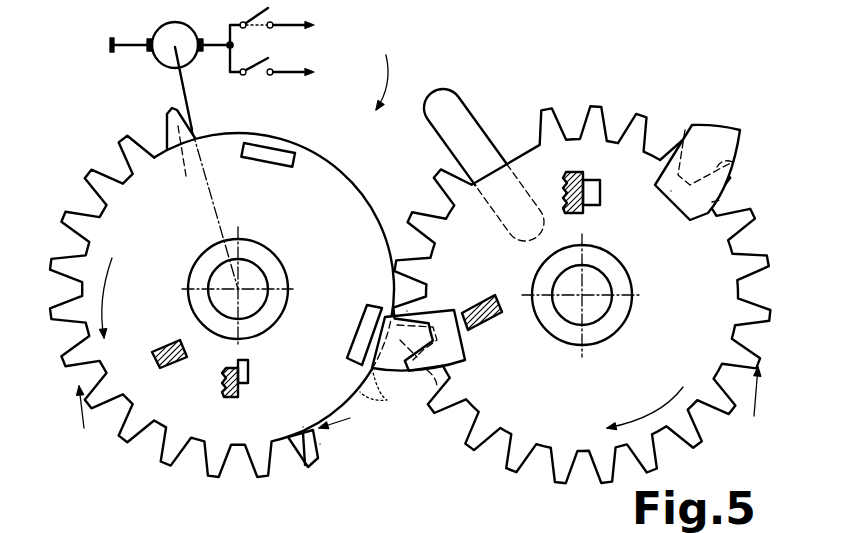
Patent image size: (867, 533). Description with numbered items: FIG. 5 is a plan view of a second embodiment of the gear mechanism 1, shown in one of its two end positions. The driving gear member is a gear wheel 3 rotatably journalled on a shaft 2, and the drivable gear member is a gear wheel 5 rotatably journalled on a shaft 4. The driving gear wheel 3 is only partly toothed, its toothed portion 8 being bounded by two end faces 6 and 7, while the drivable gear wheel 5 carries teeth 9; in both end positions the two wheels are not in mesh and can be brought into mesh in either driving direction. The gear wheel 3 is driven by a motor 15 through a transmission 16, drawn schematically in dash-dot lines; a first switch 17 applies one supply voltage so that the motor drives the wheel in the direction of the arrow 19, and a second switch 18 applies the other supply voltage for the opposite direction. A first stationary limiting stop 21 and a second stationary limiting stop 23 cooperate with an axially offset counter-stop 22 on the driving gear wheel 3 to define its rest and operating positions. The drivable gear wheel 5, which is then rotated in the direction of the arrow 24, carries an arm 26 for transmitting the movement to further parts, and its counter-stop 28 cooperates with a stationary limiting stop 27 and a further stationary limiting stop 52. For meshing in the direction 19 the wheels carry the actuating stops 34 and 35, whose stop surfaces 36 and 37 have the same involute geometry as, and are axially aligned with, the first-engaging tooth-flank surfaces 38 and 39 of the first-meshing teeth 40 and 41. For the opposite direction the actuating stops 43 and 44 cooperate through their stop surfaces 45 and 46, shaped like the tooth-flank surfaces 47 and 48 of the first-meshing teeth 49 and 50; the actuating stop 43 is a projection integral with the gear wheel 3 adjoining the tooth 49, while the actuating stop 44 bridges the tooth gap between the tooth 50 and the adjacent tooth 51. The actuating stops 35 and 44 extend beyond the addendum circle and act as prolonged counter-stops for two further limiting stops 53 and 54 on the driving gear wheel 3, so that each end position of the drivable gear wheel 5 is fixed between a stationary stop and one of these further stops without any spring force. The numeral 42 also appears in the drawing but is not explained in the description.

The gear mechanism 1 is at (396, 49).
The shaft 2 is at (262, 280).
The driving gear wheel 3 is at (132, 223).
The shaft 4 is at (602, 308).
The drivable gear wheel 5 is at (552, 398).
The end face 6 is at (366, 425).
The end face 7 is at (201, 137).
The toothed portion 8 is at (92, 455).
The teeth 9 is at (764, 441).
The motor 15 is at (163, 33).
The transmission 16 is at (213, 190).
The first switch 17 is at (265, 14).
The second switch 18 is at (268, 59).
The driving direction arrow 19 is at (106, 292).
The first stationary limiting stop 21 is at (223, 378).
The counter-stop 22 is at (249, 368).
The second stationary limiting stop 23 is at (159, 346).
The driving direction arrow 24 is at (638, 418).
The arm 26 is at (447, 98).
The stationary limiting stop 27 is at (585, 176).
The counter-stop 28 is at (600, 195).
The actuating stop 34 is at (305, 454).
The actuating stop 35 is at (465, 348).
The stop surface 36 is at (320, 452).
The stop surface 37 is at (395, 370).
The tooth-flank surface 38 is at (320, 444).
The tooth-flank surface 39 is at (437, 374).
The first-meshing tooth 40 is at (303, 427).
The first-meshing tooth 41 is at (413, 342).
The projection 42 is at (407, 311).
The actuating stop 43 is at (170, 128).
The actuating stop 44 is at (671, 191).
The stop surface 45 is at (188, 112).
The stop surface 46 is at (760, 140).
The tooth-flank surface 47 is at (192, 128).
The tooth-flank surface 48 is at (712, 202).
The first-meshing tooth 49 is at (188, 157).
The first-meshing tooth 50 is at (733, 163).
The adjacent tooth 51 is at (684, 137).
The further stationary limiting stop 52 is at (498, 307).
The further limiting stop 53 is at (368, 325).
The further limiting stop 54 is at (276, 162).